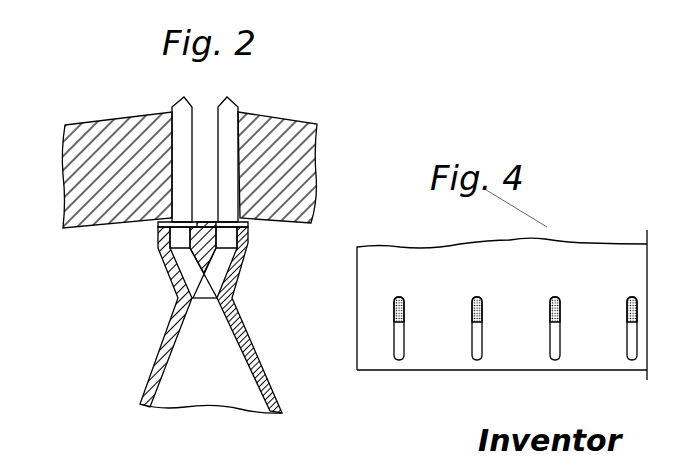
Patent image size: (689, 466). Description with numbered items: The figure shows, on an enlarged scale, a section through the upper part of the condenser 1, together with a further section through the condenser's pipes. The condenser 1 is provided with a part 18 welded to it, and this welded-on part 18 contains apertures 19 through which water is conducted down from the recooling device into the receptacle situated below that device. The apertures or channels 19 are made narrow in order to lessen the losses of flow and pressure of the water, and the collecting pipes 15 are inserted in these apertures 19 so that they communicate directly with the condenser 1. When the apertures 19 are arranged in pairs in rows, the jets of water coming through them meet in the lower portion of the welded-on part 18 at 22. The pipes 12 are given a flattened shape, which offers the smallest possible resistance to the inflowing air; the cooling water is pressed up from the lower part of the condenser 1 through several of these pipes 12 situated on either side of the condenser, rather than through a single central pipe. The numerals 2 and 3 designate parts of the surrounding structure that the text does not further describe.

In FIG. 2, the condenser 1 is at (233, 354).
In FIG. 2, the wall block 2 is at (88, 132).
In FIG. 2, the wall block 3 is at (282, 118).
In FIG. 4, the pipes 12 is at (400, 297).
In FIG. 2, the collecting pipes 15 is at (180, 103).
In FIG. 2, the welded-on part 18 is at (219, 317).
In FIG. 2, the apertures 19 is at (227, 242).
In FIG. 2, the meeting point of jets 22 is at (229, 306).